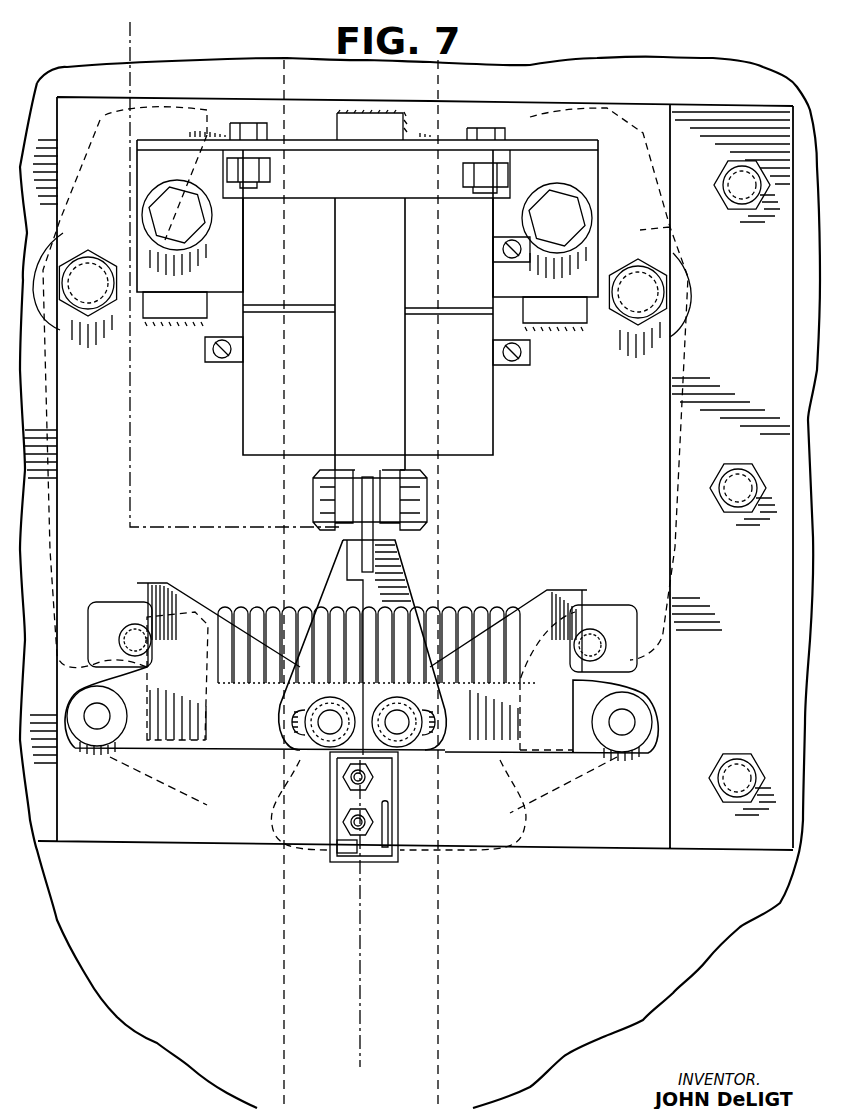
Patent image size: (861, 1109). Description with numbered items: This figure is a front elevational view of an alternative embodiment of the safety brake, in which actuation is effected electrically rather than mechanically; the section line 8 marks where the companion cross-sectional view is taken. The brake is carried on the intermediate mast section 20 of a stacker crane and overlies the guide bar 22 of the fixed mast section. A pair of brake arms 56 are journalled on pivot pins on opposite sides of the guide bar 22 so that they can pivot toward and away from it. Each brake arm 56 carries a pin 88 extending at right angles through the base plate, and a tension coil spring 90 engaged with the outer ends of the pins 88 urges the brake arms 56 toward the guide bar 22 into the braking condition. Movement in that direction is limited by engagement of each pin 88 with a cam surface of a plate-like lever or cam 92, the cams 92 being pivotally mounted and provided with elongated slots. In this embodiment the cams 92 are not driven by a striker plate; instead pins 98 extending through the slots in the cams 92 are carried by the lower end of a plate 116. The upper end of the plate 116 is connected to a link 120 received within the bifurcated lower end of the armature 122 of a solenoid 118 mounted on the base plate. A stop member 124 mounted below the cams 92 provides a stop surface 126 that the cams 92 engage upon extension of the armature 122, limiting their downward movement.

The intermediate mast section 20 is at (251, 87).
The guide bar 22 is at (443, 88).
The brake arms 56 is at (98, 133).
The section line 8— 8 is at (120, 31).
The solenoid 118 is at (510, 393).
The armature 122 is at (390, 488).
The link 120 is at (367, 537).
The plate 116 is at (388, 592).
The tension coil spring 90 is at (447, 613).
The cams 92 is at (228, 740).
The pin 88 is at (592, 644).
The pins 98 is at (328, 722).
The stop member 124 is at (386, 868).
The stop surface 126 is at (345, 855).